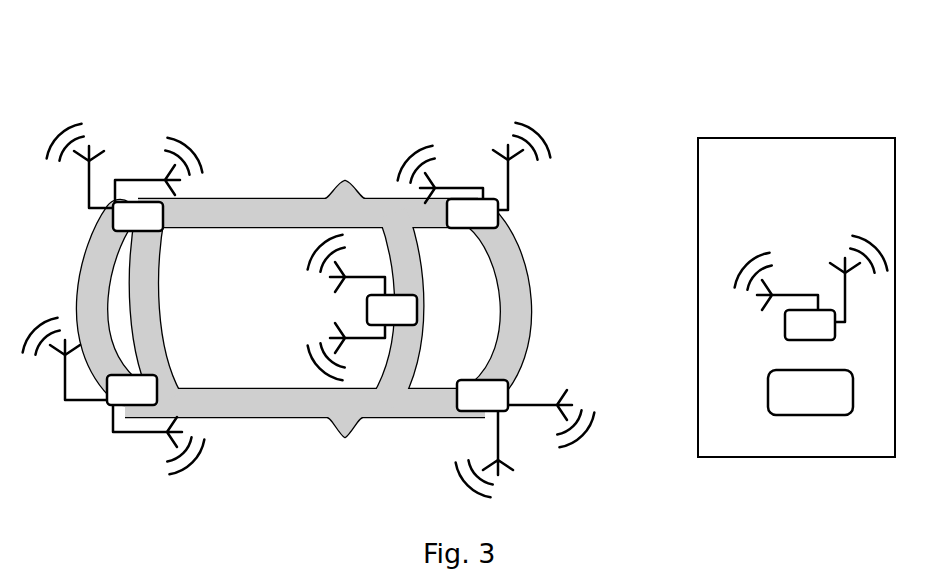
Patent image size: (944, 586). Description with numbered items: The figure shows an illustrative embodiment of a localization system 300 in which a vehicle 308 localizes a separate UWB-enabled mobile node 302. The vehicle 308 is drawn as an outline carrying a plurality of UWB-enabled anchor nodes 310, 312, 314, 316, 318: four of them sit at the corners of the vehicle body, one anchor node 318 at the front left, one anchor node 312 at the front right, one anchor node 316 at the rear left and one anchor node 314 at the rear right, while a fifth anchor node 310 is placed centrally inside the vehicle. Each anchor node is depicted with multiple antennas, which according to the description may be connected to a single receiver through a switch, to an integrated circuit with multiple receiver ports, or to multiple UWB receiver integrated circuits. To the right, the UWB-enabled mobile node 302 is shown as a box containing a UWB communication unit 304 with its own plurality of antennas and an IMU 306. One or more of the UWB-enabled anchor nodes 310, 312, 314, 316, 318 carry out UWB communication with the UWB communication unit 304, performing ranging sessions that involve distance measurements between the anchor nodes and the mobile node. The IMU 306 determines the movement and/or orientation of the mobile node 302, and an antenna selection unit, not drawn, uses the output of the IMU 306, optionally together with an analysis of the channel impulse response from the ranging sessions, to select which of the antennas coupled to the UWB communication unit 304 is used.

The localization system 300 is at (360, 78).
The UWB-enabled mobile node 302 is at (796, 282).
The UWB communication unit 304 is at (785, 325).
The IMU 306 is at (768, 395).
The vehicle 308 is at (302, 199).
The UWB-enabled anchor node 310 is at (417, 310).
The UWB-enabled anchor node 312 is at (462, 229).
The UWB-enabled anchor node 314 is at (472, 380).
The UWB-enabled anchor node 316 is at (157, 378).
The UWB-enabled anchor node 318 is at (163, 230).